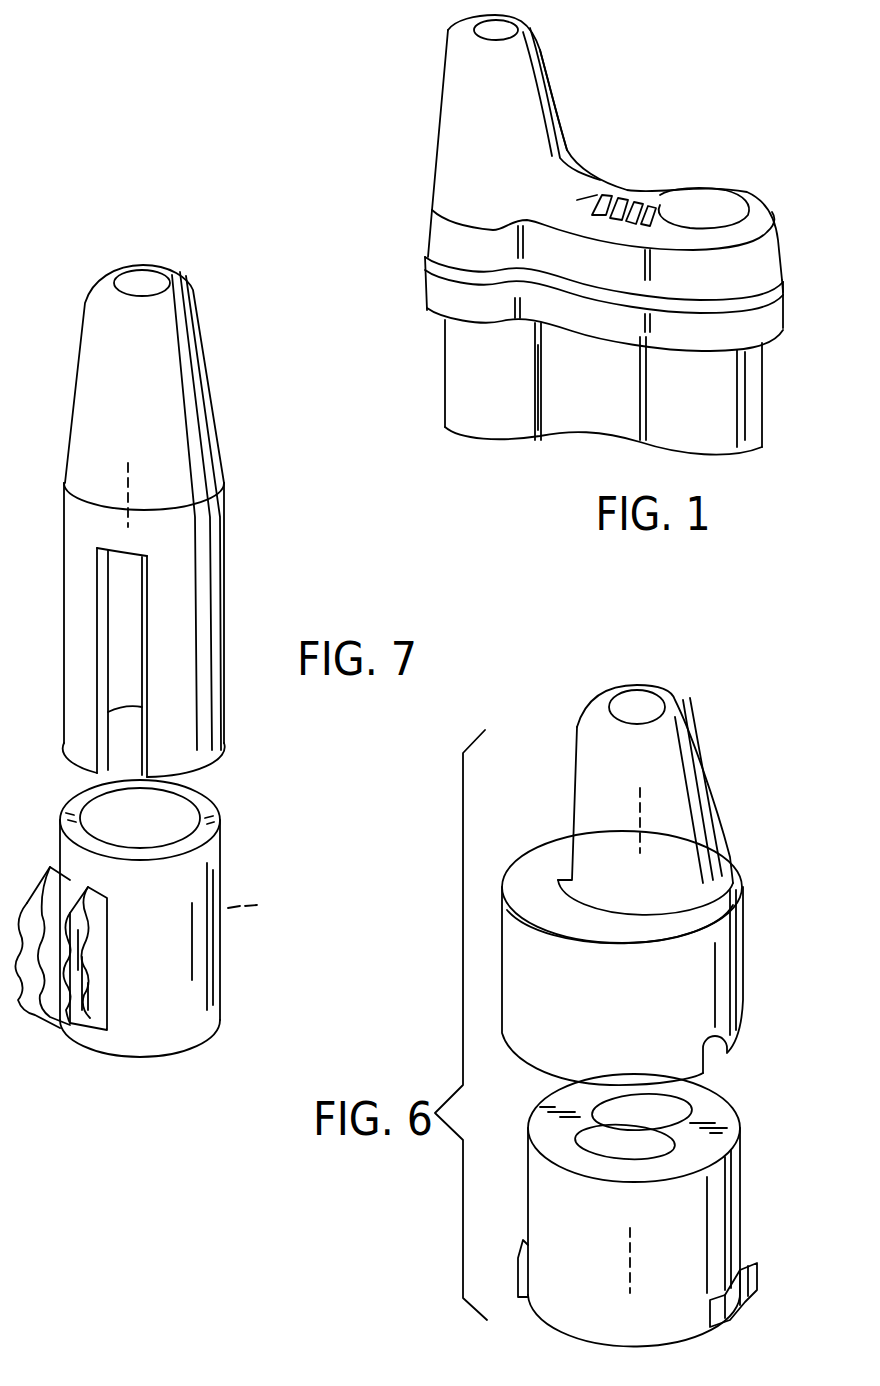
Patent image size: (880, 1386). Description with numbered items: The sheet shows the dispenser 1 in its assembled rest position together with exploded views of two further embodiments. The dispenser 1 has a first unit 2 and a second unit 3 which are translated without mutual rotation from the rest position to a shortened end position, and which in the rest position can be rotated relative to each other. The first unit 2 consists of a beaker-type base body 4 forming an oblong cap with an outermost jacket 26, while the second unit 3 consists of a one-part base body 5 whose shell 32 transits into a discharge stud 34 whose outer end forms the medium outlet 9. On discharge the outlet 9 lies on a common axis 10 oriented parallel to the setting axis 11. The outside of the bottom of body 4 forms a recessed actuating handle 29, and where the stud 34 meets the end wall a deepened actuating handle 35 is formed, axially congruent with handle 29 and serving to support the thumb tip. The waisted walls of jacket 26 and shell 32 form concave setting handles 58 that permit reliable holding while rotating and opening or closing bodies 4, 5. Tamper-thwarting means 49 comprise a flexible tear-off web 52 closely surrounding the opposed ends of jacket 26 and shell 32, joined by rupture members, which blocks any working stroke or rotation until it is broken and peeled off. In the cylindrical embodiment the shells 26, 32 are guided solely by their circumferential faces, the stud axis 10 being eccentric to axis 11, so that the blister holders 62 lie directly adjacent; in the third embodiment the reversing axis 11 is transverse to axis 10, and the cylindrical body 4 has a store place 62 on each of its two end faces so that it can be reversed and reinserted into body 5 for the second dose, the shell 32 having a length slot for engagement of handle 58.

In FIG. 1, the dispenser 1 is at (681, 128).
In FIG. 1, the first unit 2 is at (604, 353).
In FIG. 1, the second unit 3 is at (578, 147).
In FIG. 7, the base body 4 is at (148, 928).
In FIG. 6, the base body 4 is at (633, 1210).
In FIG. 7, the base body 5 is at (174, 521).
In FIG. 6, the base body 5 is at (622, 885).
In FIG. 1, the medium outlet 9 is at (515, 38).
In FIG. 7, the common axis 10 is at (128, 520).
In FIG. 6, the common axis 10 is at (640, 843).
In FIG. 7, the setting axis 11 is at (258, 903).
In FIG. 6, the setting axis 11 is at (630, 1283).
In FIG. 6, the outermost jacket 26 is at (540, 1195).
In FIG. 1, the recessed actuating handle 29 is at (587, 438).
In FIG. 7, the shell 32 is at (220, 710).
In FIG. 6, the shell 32 is at (525, 957).
In FIG. 1, the discharge stud 34 is at (571, 95).
In FIG. 7, the discharge stud 34 is at (205, 403).
In FIG. 6, the discharge stud 34 is at (590, 787).
In FIG. 1, the deepened actuating handle 35 is at (630, 192).
In FIG. 1, the tamper-thwarting means 49 is at (497, 278).
In FIG. 1, the tear-off web 52 is at (682, 342).
In FIG. 1, the setting handle 58 is at (580, 383).
In FIG. 7, the setting handle 58 is at (98, 968).
In FIG. 7, the recessed reception 62 is at (152, 830).
In FIG. 6, the recessed reception 62 is at (688, 1110).